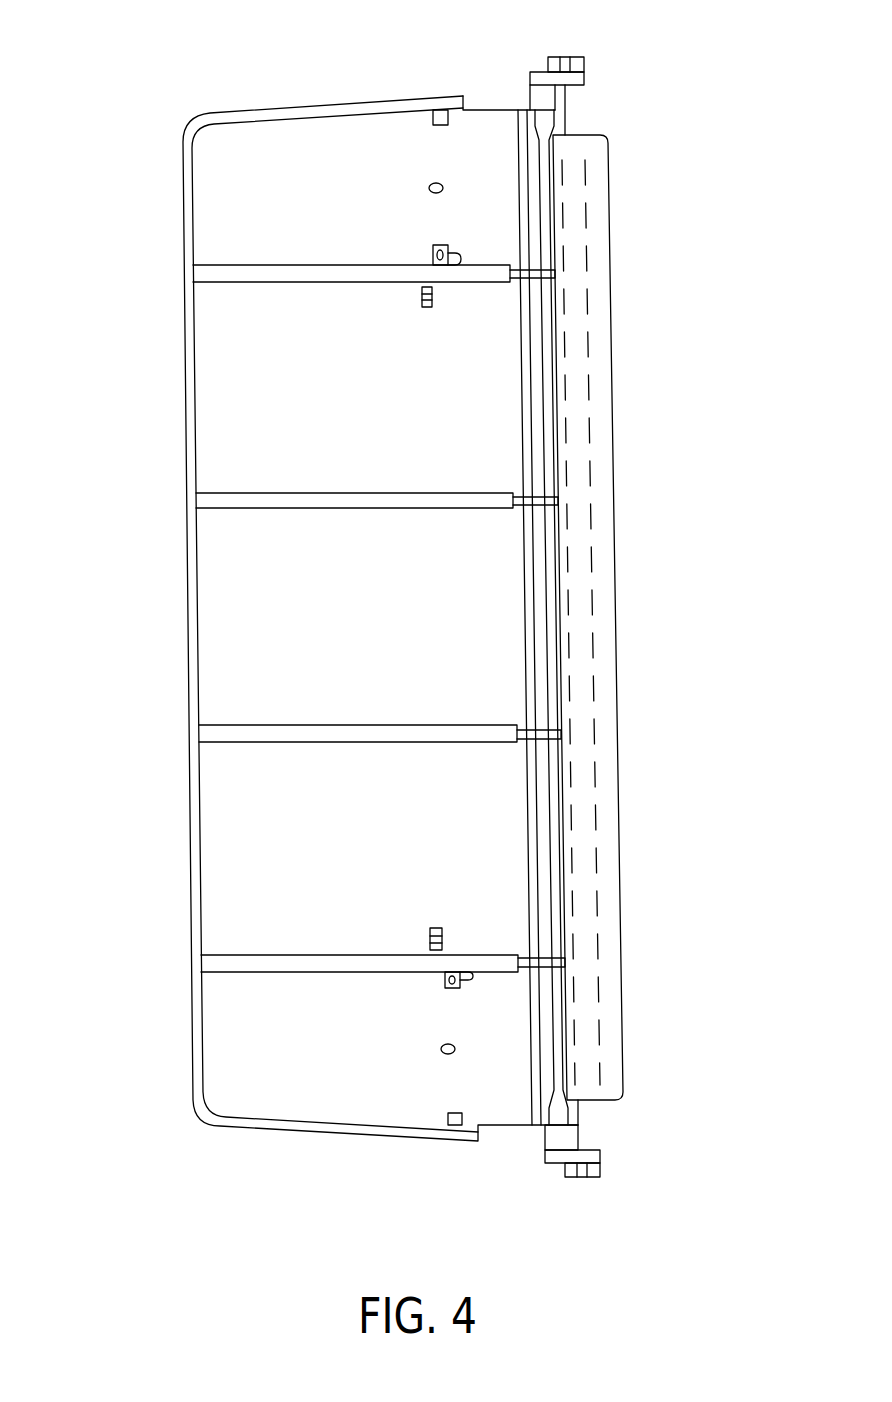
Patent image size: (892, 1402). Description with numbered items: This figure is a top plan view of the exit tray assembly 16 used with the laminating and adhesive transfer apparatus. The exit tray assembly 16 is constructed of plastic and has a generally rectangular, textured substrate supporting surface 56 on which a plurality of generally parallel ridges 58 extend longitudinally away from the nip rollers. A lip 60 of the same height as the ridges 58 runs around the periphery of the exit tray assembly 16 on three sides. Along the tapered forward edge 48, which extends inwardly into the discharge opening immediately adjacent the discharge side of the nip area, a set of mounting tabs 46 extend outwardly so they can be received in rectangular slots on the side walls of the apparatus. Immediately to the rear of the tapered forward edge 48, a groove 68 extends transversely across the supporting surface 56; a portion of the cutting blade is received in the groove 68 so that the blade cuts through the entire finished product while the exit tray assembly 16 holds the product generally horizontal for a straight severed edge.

The exit tray assembly 16 is at (400, 623).
The mounting tabs 46 is at (578, 57).
The tapered forward edge 48 is at (597, 230).
The substrate supporting surface 56 is at (230, 835).
The ridges 58 is at (340, 510).
The lip 60 is at (306, 107).
The groove 68 is at (557, 858).